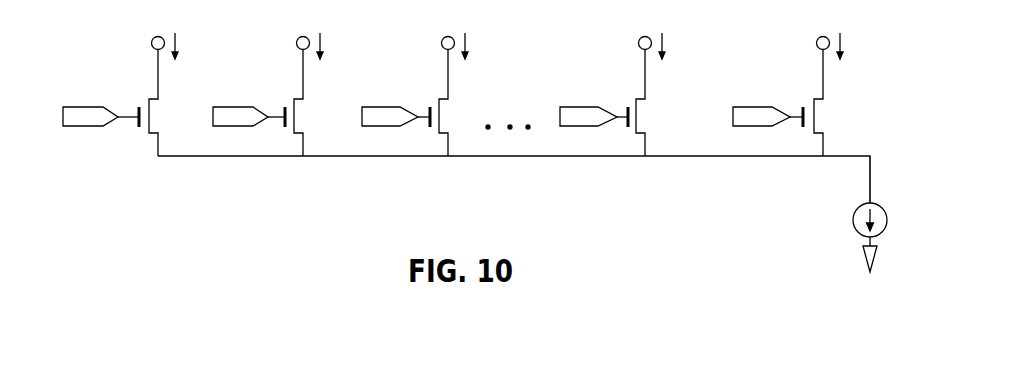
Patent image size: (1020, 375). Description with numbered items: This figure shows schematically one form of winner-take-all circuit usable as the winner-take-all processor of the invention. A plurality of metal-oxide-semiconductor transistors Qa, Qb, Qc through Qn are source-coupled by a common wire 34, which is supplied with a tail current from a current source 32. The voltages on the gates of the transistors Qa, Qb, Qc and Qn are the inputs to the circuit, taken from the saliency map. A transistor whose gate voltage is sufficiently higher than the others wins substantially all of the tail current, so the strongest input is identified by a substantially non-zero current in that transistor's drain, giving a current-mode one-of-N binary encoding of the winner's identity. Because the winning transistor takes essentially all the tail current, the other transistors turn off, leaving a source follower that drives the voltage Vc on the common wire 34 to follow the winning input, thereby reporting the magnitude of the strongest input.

The current source 32 is at (862, 233).
The common wire 34 is at (605, 157).
The MOS transistor Qa is at (133, 83).
The MOS transistor Qb is at (281, 83).
The MOS transistor Qc is at (427, 83).
The MOS transistor Qn is at (797, 83).